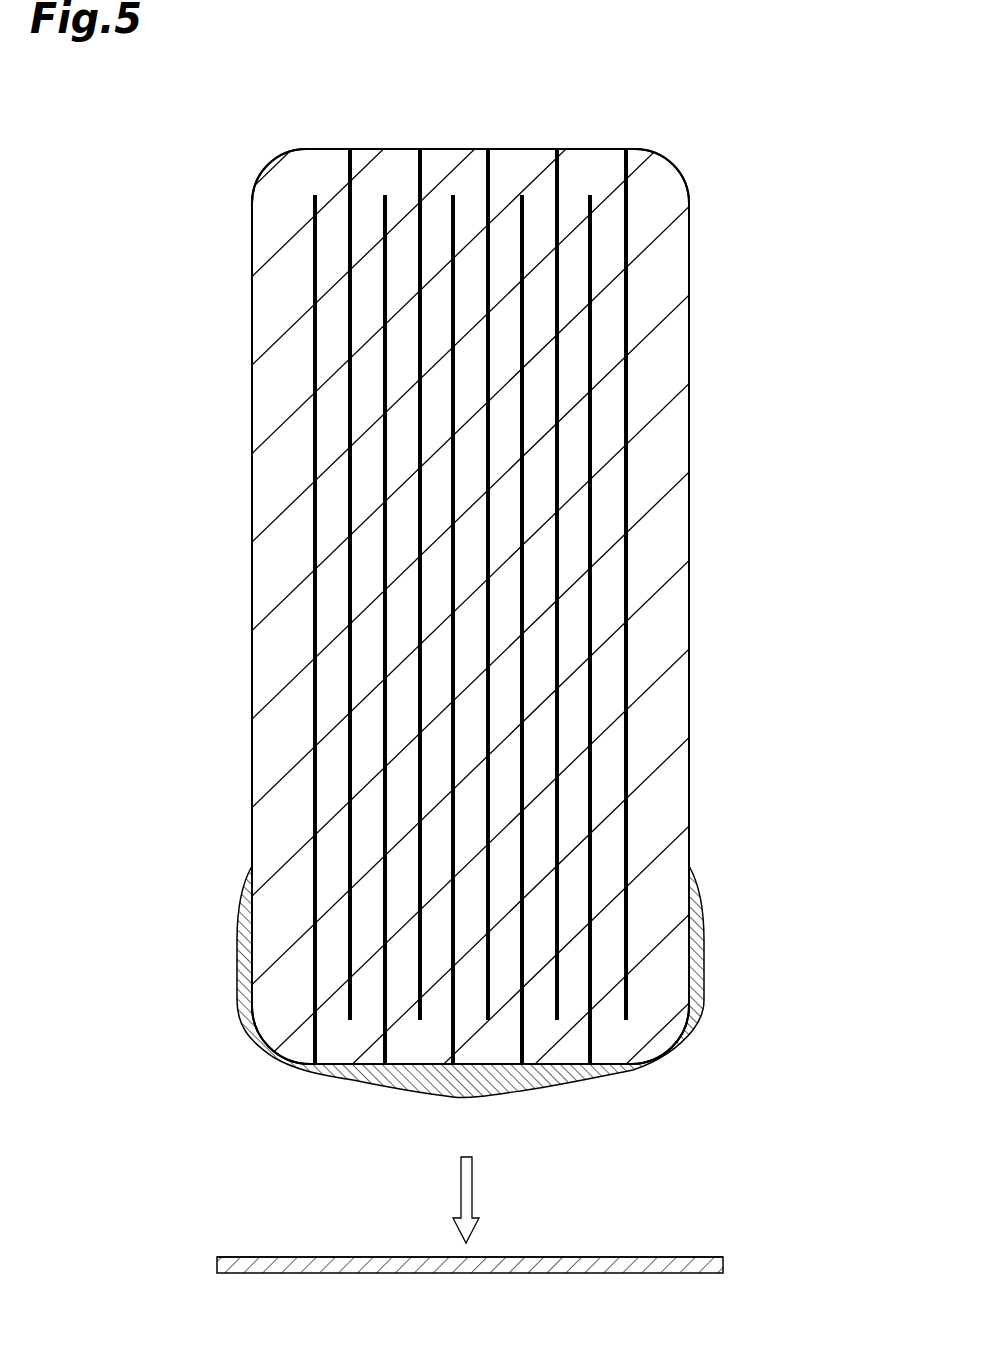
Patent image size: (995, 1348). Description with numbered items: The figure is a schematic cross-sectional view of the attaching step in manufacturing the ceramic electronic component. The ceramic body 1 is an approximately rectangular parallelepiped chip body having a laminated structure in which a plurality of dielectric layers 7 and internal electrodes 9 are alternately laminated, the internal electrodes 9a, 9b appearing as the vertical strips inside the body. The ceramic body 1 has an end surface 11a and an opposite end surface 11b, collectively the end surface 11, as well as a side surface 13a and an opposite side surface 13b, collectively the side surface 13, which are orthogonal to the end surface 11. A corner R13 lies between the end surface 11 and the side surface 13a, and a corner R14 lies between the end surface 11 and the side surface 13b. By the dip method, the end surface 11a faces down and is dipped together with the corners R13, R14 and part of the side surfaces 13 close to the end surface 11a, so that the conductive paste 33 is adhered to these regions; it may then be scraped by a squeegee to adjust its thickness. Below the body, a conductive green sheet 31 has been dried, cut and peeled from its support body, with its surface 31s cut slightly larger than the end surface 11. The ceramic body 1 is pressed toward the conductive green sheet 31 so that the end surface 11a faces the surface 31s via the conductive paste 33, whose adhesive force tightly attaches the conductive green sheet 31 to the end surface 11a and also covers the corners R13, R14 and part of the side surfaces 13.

The ceramic body 1 is at (471, 674).
The dielectric layer 7 is at (592, 165).
The internal electrode 9 is at (547, 570).
The internal electrode 9a is at (627, 820).
The internal electrode 9b is at (348, 175).
The end surface 11 is at (470, 619).
The end surface 11a is at (418, 1070).
The end surface 11b is at (462, 147).
The side surface 13 is at (471, 604).
The side surface 13a is at (252, 587).
The side surface 13b is at (690, 587).
The corner R13 is at (268, 173).
The corner R14 is at (677, 170).
The conductive paste 33 is at (697, 978).
The conductive green sheet 31 is at (502, 1235).
The surface 31s is at (706, 1257).